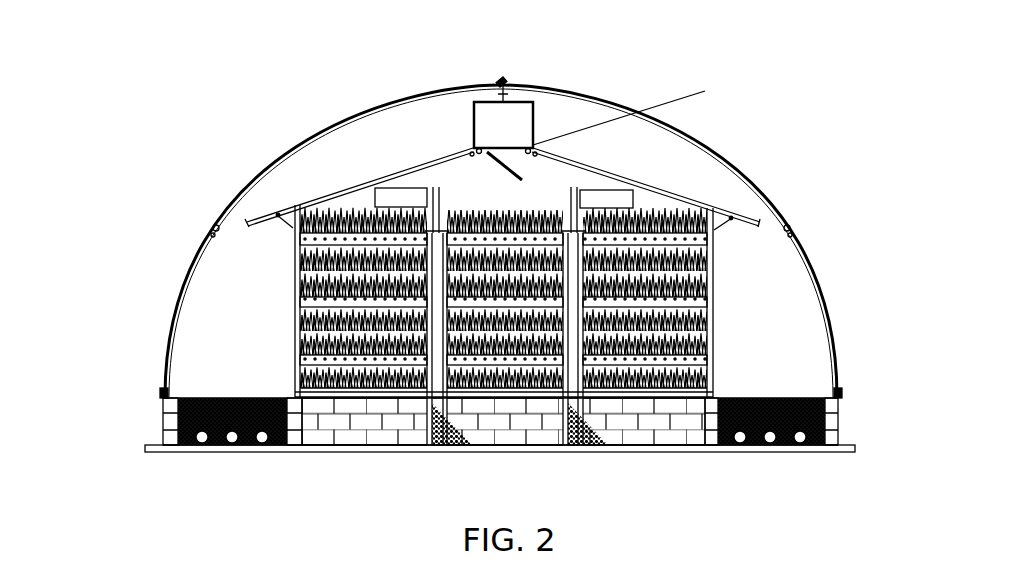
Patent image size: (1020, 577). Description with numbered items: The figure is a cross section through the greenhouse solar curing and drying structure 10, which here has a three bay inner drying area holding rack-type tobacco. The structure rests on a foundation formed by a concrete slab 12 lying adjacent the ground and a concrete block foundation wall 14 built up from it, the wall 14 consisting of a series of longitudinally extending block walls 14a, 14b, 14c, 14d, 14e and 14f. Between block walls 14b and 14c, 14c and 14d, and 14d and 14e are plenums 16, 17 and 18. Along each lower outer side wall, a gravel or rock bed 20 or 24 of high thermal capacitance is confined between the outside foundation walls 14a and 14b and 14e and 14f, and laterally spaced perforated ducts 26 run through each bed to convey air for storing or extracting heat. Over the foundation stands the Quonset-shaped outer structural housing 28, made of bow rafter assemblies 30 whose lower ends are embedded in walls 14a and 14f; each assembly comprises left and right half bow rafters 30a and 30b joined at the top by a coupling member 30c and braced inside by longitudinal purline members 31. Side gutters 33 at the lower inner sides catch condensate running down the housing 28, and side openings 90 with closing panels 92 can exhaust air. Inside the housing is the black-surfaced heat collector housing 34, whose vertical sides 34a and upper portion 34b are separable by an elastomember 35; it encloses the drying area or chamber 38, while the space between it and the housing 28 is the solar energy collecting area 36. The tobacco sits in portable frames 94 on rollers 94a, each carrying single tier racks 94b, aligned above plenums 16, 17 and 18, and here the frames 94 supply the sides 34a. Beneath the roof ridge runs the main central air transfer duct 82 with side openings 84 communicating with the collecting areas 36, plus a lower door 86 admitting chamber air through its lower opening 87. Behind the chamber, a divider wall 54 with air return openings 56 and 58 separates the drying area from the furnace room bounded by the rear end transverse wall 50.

The solar curing and drying structure 10 is at (582, 52).
The concrete slab 12 is at (150, 452).
The concrete block foundation wall 14 is at (148, 393).
The block wall 14a is at (165, 422).
The block wall 14b is at (294, 442).
The block wall 14c is at (439, 442).
The block wall 14d is at (572, 440).
The block wall 14e is at (712, 442).
The block wall 14f is at (832, 442).
The plenum 16 is at (352, 440).
The plenum 17 is at (505, 436).
The plenum 18 is at (663, 440).
The gravel or rock bed 20 is at (216, 317).
The gravel or rock bed 24 is at (766, 398).
The perforated ducts 26 is at (232, 444).
The outer structural housing 28 is at (848, 270).
The bow rafter assemblies 30 is at (501, 238).
The left-hand half bow rafter 30a is at (302, 154).
The right-hand half bow rafter 30b is at (800, 214).
The coupling member 30c is at (512, 79).
The longitudinal purline members 31 is at (212, 225).
The side gutters 33 is at (164, 394).
The heat collector housing 34 is at (270, 296).
The vertical sides 34a is at (180, 300).
The upper portion 34b is at (333, 152).
The elastomember 35 is at (262, 234).
The solar energy collecting area 36 is at (182, 322).
The drying area or chamber 38 is at (662, 186).
The rear end transverse wall 50 is at (372, 131).
The divider wall 54 is at (482, 244).
The air return opening 56 is at (427, 199).
The air return opening 58 is at (612, 206).
The main central air transfer duct 82 is at (546, 106).
The side openings 84 is at (473, 146).
The bottom openings or lower door 86 is at (406, 167).
The lower opening 87 is at (542, 152).
The side openings 90 is at (162, 399).
The closing panel 92 is at (158, 392).
The portable frames 94 is at (440, 233).
The rollers 94a is at (305, 395).
The single tier racks 94b is at (172, 292).